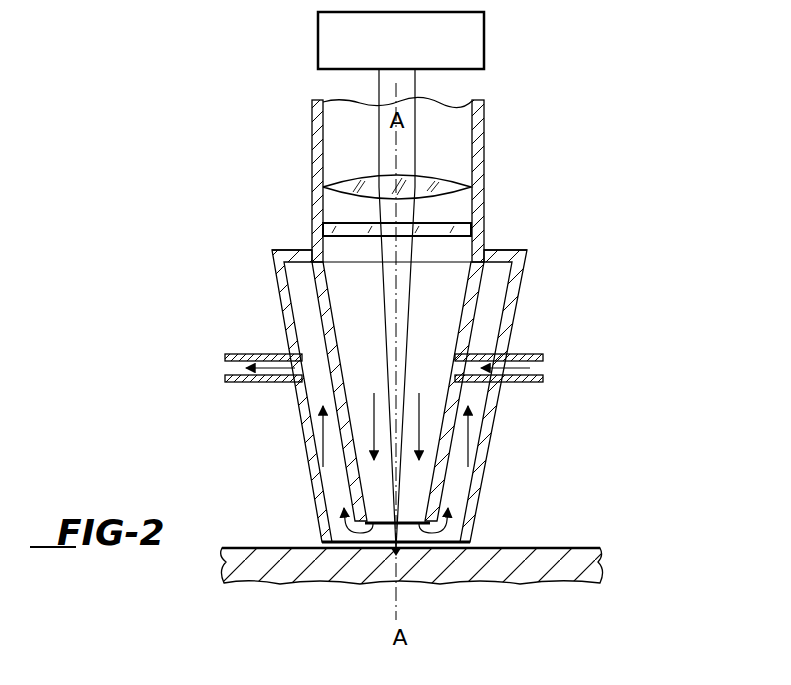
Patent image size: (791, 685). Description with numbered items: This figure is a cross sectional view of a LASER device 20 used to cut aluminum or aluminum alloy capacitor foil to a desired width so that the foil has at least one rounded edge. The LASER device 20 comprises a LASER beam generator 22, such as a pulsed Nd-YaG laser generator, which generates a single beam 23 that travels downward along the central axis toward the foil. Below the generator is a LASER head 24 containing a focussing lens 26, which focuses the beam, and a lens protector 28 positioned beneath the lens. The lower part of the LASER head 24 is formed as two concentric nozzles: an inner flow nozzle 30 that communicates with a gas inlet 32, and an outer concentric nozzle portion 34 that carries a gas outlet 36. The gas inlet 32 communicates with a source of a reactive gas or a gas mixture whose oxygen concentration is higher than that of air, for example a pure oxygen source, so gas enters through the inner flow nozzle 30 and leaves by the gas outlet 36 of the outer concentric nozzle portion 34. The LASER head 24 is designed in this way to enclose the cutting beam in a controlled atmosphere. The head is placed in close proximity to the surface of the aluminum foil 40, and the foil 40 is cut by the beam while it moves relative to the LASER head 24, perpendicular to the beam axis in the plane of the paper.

The LASER device 20 is at (288, 148).
The LASER beam generator 22 is at (483, 40).
The single beam 23 is at (403, 135).
The LASER head 24 is at (281, 236).
The focussing lens 26 is at (445, 188).
The lens protector 28 is at (450, 228).
The inner flow nozzle 30 is at (478, 300).
The gas inlet 32 is at (543, 372).
The outer concentric nozzle portion 34 is at (286, 293).
The gas outlet 36 is at (250, 355).
The foil 40 is at (516, 560).